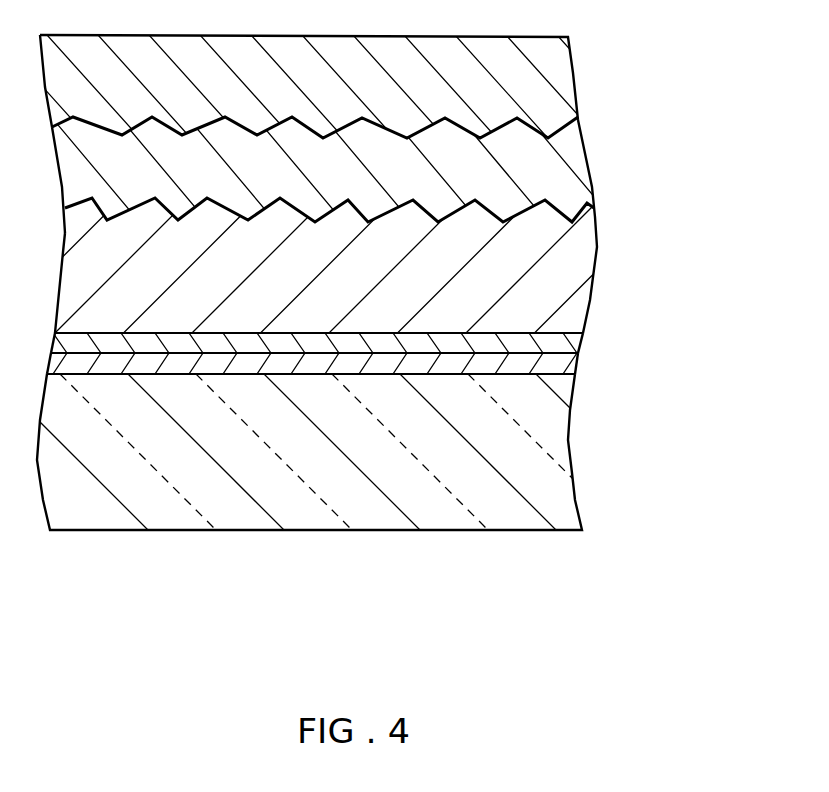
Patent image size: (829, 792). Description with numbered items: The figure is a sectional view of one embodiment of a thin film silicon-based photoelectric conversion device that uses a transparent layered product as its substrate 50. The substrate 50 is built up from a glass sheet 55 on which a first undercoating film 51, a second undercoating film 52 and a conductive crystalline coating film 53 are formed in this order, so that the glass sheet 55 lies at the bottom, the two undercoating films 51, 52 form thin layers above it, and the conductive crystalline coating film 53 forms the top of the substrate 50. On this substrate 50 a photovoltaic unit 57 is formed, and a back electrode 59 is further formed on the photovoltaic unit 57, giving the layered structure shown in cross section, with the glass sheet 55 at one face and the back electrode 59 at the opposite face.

The back electrode 59 is at (570, 73).
The photovoltaic unit 57 is at (577, 158).
The conductive crystalline coating film 53 is at (590, 257).
The second undercoating film 52 is at (575, 340).
The first undercoating film 51 is at (575, 370).
The glass sheet 55 is at (351, 454).
The substrate 50 is at (381, 358).